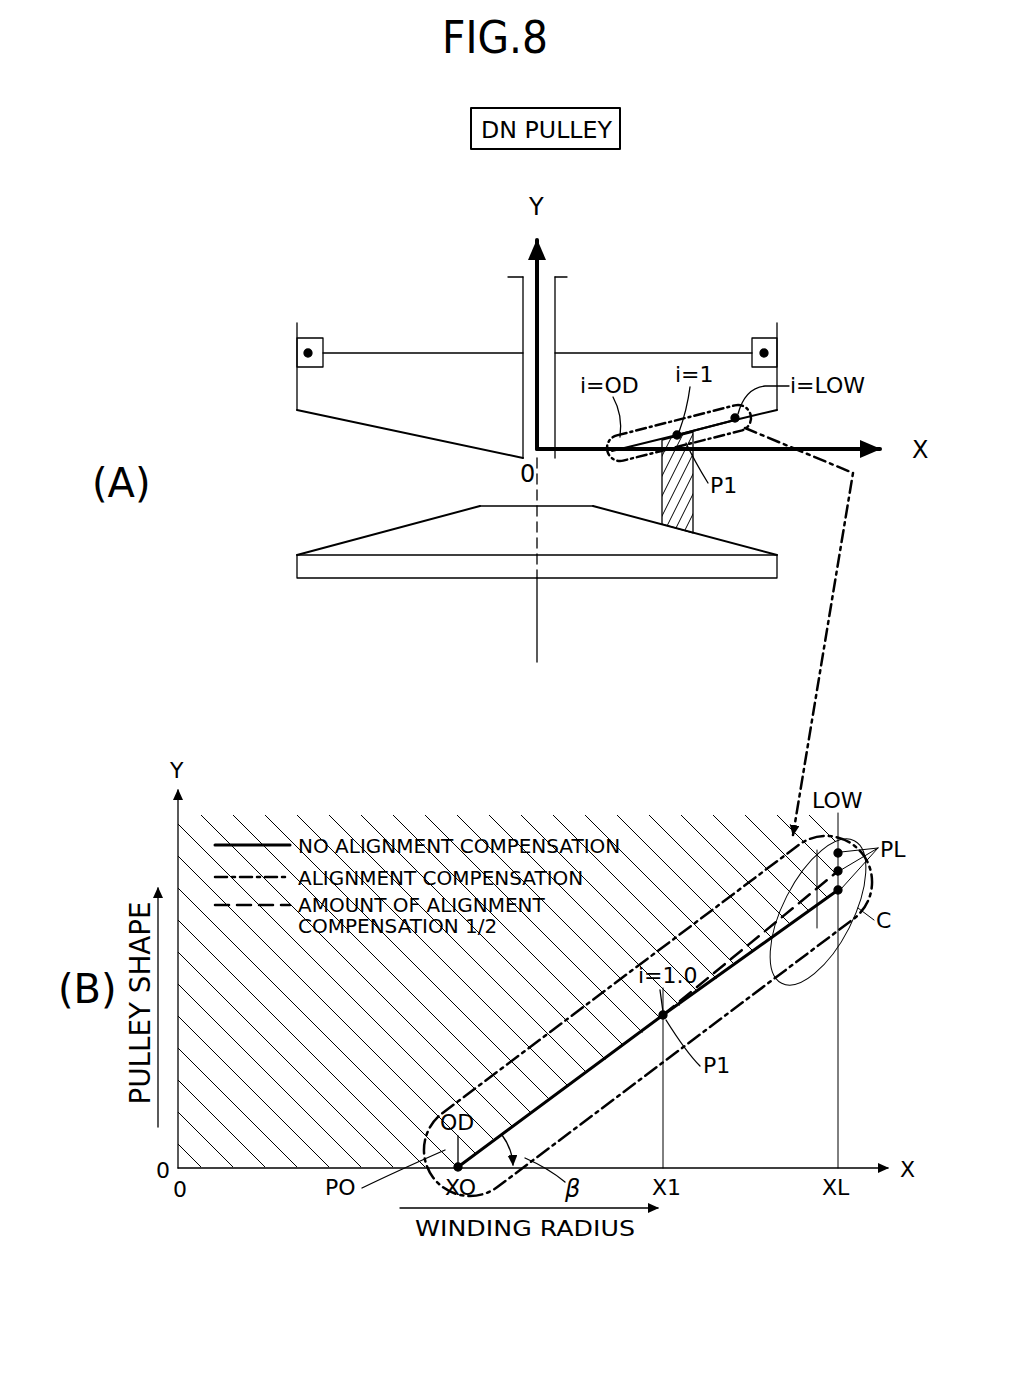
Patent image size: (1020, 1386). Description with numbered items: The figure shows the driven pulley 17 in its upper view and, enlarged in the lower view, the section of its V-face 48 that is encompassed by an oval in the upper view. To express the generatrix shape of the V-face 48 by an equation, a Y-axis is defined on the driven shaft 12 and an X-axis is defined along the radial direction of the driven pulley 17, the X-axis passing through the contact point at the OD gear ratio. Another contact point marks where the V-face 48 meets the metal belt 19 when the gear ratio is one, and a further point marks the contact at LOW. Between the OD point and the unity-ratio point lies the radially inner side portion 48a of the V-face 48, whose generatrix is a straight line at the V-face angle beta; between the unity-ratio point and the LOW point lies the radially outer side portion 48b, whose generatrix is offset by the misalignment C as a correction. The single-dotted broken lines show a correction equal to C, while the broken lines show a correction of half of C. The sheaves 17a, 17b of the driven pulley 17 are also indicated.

The driven shaft 12 is at (537, 612).
The driven pulley 17 is at (220, 445).
The fixed sheave 17a is at (338, 538).
The movable sheave 17b is at (330, 425).
The metal belt 19 is at (690, 500).
The V-face 48 is at (393, 438).
The radially inner side portion 48a is at (637, 454).
The radially outer side portion 48b is at (706, 434).